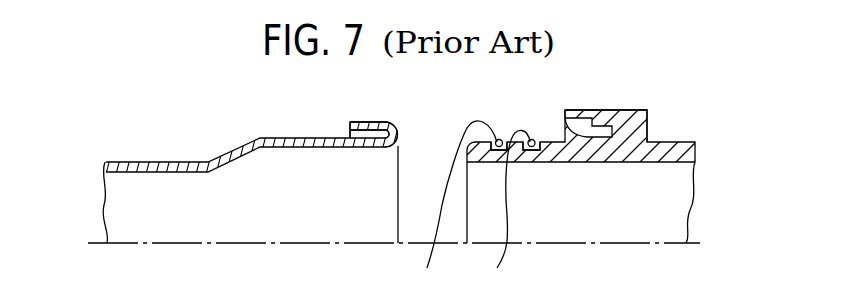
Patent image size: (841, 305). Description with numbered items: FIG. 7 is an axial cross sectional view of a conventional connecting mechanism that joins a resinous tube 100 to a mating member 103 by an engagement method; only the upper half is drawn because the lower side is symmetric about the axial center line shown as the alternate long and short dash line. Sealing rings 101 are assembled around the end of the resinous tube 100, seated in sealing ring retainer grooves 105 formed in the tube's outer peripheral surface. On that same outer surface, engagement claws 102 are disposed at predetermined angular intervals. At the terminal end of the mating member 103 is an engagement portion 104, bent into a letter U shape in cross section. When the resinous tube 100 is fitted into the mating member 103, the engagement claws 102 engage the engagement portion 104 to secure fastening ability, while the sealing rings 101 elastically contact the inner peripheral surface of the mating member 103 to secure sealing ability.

The resinous tube 100 is at (672, 189).
The sealing rings 101 is at (499, 140).
The engagement claws 102 is at (612, 128).
The mating member 103 is at (118, 200).
The engagement portion 104 is at (362, 122).
The sealing ring retainer grooves 105 is at (455, 208).